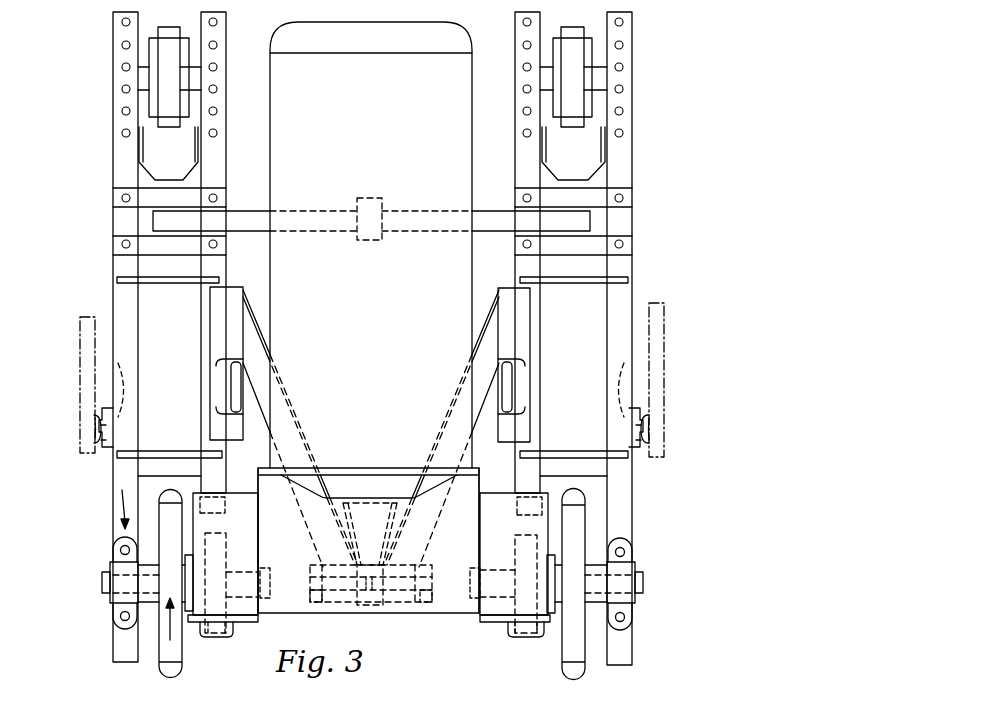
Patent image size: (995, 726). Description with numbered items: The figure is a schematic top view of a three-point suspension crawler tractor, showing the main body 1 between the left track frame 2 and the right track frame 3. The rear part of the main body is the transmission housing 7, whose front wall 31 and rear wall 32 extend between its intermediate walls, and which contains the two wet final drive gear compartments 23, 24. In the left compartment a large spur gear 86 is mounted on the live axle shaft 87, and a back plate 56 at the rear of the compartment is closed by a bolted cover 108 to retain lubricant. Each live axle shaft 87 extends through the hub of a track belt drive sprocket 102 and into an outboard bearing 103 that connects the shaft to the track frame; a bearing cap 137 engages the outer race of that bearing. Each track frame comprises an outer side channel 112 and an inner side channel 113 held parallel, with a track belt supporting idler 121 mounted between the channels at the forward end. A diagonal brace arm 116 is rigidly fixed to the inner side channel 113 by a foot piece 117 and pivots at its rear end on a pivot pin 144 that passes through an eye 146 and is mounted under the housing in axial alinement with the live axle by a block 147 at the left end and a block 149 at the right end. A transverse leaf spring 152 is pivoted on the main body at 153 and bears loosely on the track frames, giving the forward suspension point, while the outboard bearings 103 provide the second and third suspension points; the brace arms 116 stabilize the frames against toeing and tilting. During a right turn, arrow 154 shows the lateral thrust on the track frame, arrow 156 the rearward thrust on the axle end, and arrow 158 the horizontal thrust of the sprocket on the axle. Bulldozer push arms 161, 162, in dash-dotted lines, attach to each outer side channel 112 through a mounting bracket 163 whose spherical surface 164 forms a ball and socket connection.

The main body 1 is at (405, 148).
The track frame 2 is at (105, 241).
The track frame 3 is at (636, 261).
The transmission housing 7 is at (472, 517).
The final drive gear compartment 23 is at (250, 490).
The final drive gear compartment 24 is at (503, 490).
The front wall 31 is at (338, 498).
The rear wall 32 is at (450, 612).
The back plate 56 is at (257, 613).
The spur gear 86 is at (225, 538).
The live axle shaft 87 is at (247, 571).
The track belt drive sprocket 102 is at (170, 678).
The outboard bearing 103 is at (113, 610).
The cover 108 is at (230, 631).
The outer side channel 112 is at (113, 300).
The inner side channel 113 is at (225, 163).
The diagonal brace arm 116 is at (302, 427).
The foot piece 117 is at (243, 435).
The track belt supporting idler 121 is at (170, 121).
The bearing cap 137 is at (105, 572).
The pivot pin 144 is at (312, 582).
The eye 146 is at (338, 604).
The block 147 is at (312, 598).
The block 149 is at (373, 604).
The transverse leaf spring 152 is at (246, 216).
The pivot 153 is at (382, 203).
The arrow 154 is at (260, 266).
The arrow 156 is at (127, 500).
The arrow 158 is at (177, 630).
The bulldozer push arm 161 is at (80, 362).
The bulldozer push arm 162 is at (665, 372).
The mounting bracket 163 is at (102, 453).
The spherical surface 164 is at (86, 415).